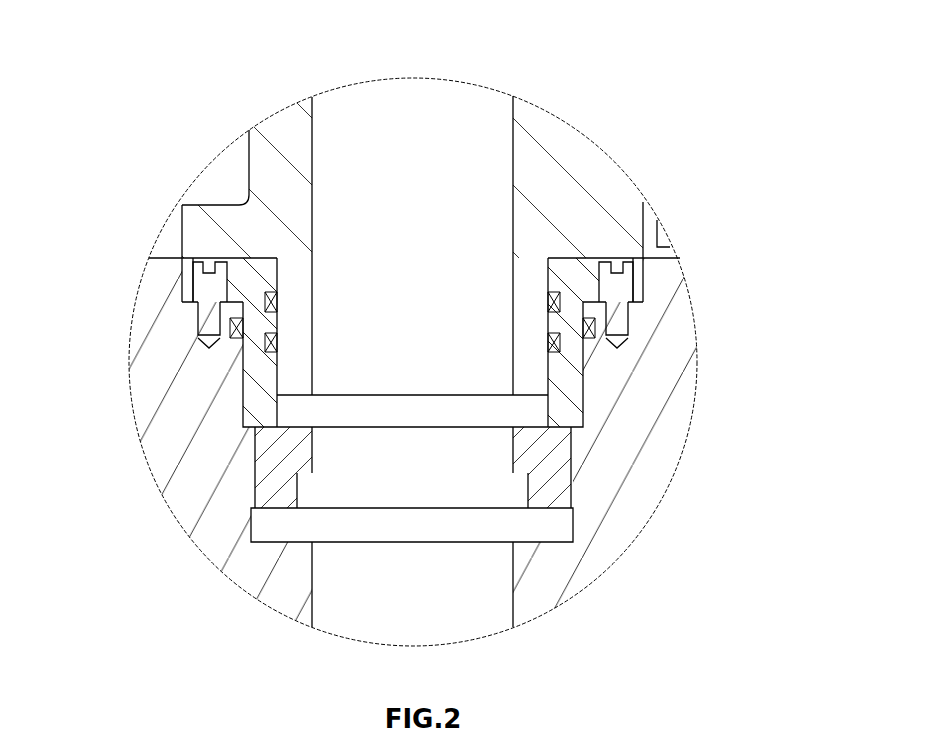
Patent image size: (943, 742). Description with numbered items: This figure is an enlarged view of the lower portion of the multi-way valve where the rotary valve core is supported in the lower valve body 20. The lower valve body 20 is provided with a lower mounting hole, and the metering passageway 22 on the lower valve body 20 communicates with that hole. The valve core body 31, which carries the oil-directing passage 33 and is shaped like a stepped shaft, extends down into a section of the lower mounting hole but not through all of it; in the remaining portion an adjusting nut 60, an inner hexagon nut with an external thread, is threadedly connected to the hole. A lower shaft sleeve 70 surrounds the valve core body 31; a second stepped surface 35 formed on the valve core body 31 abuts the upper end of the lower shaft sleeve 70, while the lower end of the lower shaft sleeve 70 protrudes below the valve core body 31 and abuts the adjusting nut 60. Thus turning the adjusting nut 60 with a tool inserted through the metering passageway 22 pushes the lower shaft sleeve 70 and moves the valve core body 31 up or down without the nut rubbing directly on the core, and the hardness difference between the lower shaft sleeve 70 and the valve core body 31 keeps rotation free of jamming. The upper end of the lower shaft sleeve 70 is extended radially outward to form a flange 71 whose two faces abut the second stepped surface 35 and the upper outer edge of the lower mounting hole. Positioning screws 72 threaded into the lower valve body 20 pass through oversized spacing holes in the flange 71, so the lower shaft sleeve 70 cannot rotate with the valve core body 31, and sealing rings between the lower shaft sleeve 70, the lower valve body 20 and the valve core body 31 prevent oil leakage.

The lower valve body 20 is at (647, 467).
The metering passageway 22 is at (463, 583).
The valve core body 31 is at (567, 193).
The oil-directing passage 33 is at (453, 170).
The second stepped surface 35 is at (235, 278).
The adjusting nut 60 is at (553, 480).
The lower shaft sleeve 70 is at (572, 380).
The flange 71 is at (645, 272).
The positioning screws 72 is at (623, 288).